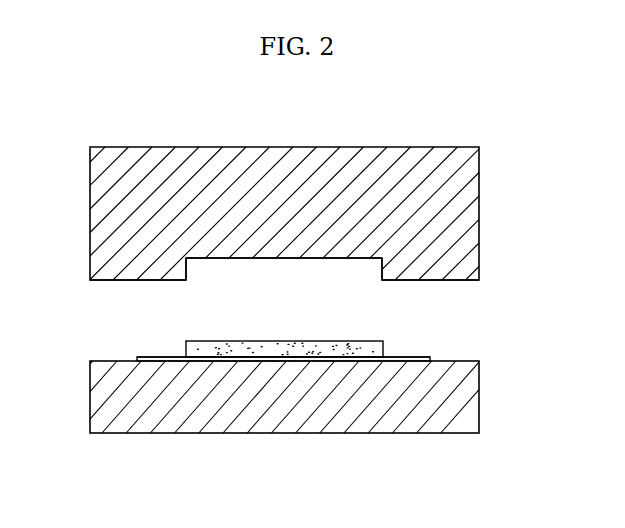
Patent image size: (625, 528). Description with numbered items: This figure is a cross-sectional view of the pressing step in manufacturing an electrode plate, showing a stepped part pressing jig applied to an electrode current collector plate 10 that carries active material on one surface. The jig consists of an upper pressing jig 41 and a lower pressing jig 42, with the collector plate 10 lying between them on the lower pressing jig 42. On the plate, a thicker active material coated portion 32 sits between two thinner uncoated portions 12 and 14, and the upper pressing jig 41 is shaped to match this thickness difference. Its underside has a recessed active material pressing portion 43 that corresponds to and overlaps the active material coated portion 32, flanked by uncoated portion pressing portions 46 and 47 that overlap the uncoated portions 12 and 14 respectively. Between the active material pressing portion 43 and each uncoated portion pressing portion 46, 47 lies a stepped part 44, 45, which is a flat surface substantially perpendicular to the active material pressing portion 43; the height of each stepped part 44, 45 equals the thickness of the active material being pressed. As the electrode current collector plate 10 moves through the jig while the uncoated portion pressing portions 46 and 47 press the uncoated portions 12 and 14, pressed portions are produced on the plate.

The electrode current collector plate 10 is at (286, 414).
The uncoated portion 12 is at (422, 352).
The uncoated portion 14 is at (146, 357).
The active material coated portion 32 is at (242, 350).
The upper pressing jig 41 is at (479, 228).
The lower pressing jig 42 is at (479, 390).
The active material pressing portion 43 is at (327, 258).
The stepped part 44 is at (381, 267).
The stepped part 45 is at (186, 278).
The uncoated portion pressing portion 46 is at (467, 281).
The uncoated portion pressing portion 47 is at (100, 281).